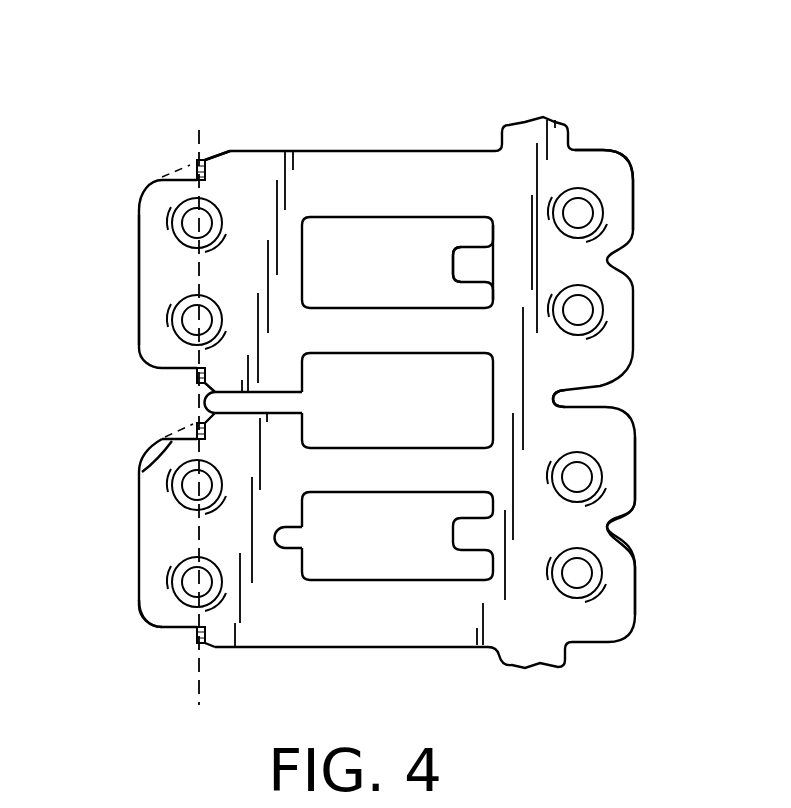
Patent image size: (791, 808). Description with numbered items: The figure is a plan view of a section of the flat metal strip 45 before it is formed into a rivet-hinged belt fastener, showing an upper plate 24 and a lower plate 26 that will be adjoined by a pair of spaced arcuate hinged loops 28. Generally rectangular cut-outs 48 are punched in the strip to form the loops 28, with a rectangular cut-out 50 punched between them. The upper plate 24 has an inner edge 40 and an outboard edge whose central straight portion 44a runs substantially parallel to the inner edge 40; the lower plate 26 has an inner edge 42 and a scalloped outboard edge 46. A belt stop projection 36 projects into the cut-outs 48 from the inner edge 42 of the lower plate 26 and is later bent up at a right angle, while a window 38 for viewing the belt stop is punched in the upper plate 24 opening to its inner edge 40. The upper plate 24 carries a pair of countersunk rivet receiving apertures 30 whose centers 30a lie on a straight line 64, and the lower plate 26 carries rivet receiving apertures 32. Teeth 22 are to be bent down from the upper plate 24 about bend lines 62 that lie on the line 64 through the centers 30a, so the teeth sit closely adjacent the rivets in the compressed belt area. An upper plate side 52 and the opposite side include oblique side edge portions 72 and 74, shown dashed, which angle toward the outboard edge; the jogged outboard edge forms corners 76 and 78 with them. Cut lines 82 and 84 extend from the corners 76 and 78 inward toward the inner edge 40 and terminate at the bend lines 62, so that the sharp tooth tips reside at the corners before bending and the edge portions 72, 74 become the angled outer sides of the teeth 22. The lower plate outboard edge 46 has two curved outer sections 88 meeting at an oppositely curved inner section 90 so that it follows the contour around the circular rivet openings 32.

The teeth 22 is at (197, 162).
The upper plate 24 is at (180, 273).
The lower plate 26 is at (593, 170).
The arcuate hinged loops 28 is at (453, 327).
The rivet receiving apertures 30 is at (172, 222).
The aperture centers 30a is at (197, 217).
The rivet receiving apertures 32 is at (585, 212).
The belt stop projection 36 is at (473, 533).
The window 38 is at (288, 545).
The inner edge 40 is at (302, 255).
The inner edge 42 is at (493, 240).
The central straight portion 44a is at (139, 268).
The flat metal strip 45 is at (127, 590).
The outboard edge 46 is at (633, 210).
The rectangular cut-outs 48 is at (395, 287).
The rectangular cut-out 50 is at (360, 406).
The upper plate side 52 is at (517, 390).
The bend lines 62 is at (207, 157).
The straight line 64 is at (201, 130).
The side edge portion 72 is at (187, 640).
The side edge portion 74 is at (190, 430).
The corner 76 is at (160, 627).
The corner 78 is at (160, 440).
The cut line 82 is at (193, 627).
The cut line 84 is at (140, 470).
The outer sections 88 is at (635, 455).
The inner section 90 is at (613, 533).